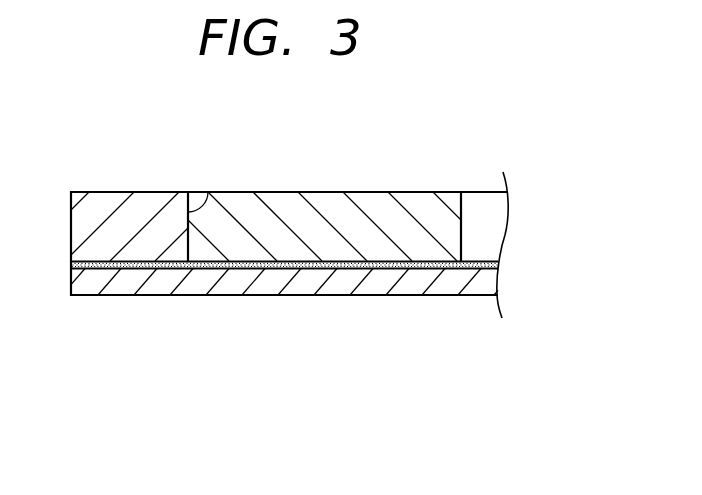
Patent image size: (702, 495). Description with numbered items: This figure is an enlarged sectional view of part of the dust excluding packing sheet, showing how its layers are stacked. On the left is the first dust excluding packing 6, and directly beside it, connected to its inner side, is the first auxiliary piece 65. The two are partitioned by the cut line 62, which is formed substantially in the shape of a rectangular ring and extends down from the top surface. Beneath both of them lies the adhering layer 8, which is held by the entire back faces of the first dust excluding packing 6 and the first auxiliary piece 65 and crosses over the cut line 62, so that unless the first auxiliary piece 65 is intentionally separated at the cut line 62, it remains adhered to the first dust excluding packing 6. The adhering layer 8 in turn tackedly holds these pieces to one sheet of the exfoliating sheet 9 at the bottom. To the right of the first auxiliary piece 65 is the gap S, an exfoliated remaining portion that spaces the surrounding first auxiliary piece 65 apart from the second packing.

The first dust excluding packing 6 is at (103, 203).
The cut line 62 is at (208, 193).
The first auxiliary piece 65 is at (315, 203).
The gap S is at (482, 203).
The adhering layer 8 is at (242, 265).
The exfoliating sheet 9 is at (380, 285).